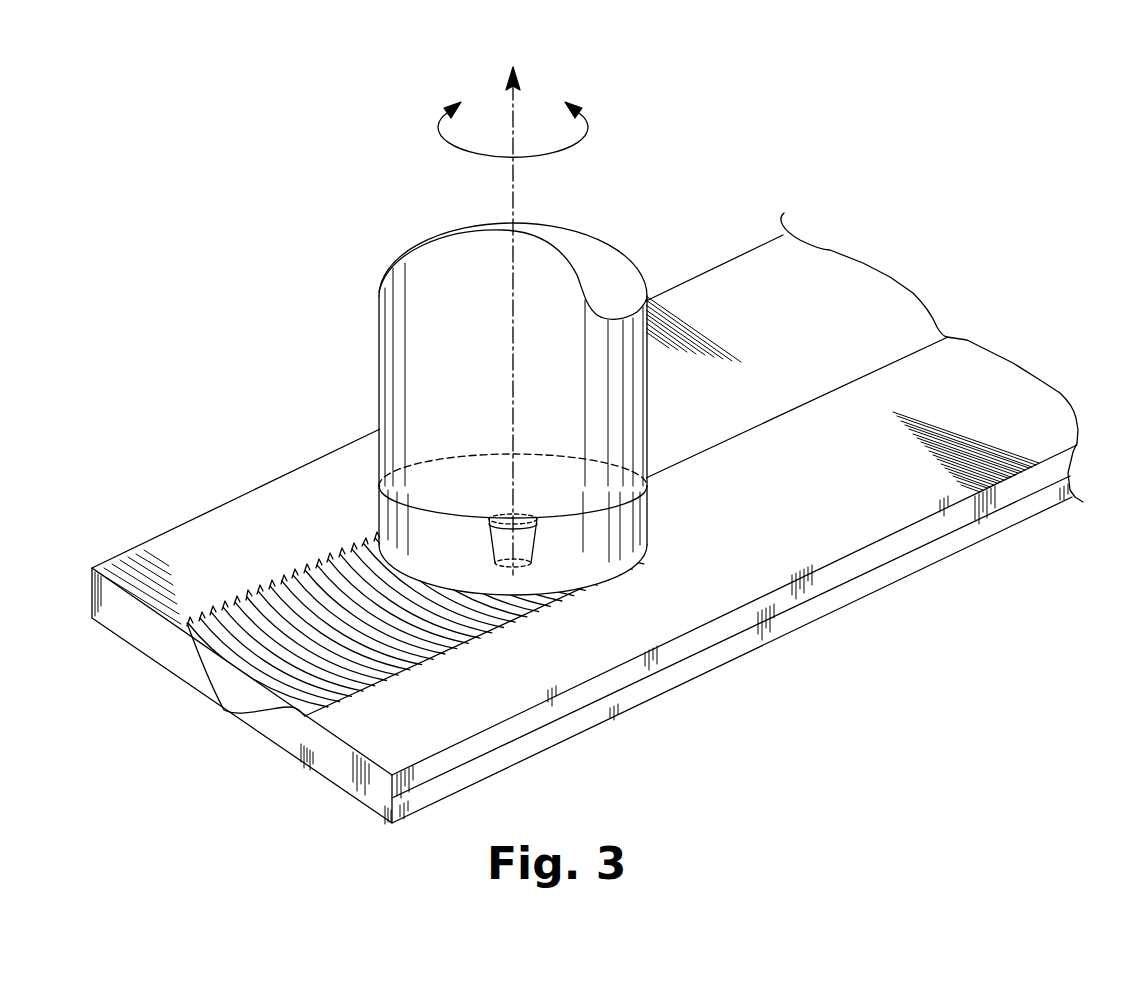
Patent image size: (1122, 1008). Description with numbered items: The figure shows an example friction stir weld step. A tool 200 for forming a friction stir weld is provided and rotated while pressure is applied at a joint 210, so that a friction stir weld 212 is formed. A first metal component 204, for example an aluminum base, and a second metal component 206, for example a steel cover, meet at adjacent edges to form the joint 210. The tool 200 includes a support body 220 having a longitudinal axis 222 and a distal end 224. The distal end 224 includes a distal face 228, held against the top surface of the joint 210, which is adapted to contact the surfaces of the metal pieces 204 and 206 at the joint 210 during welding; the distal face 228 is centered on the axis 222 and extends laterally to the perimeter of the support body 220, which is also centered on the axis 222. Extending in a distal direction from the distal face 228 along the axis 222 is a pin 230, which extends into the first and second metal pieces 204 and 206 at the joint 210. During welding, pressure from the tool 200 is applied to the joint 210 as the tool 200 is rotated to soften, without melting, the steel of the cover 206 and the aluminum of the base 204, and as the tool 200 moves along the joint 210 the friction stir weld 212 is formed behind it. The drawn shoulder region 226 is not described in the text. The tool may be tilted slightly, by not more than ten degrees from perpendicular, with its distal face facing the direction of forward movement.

The tool 200 is at (509, 370).
The first metal component 204 is at (830, 325).
The second metal component 206 is at (873, 461).
The joint 210 is at (945, 338).
The friction stir weld 212 is at (237, 692).
The support body 220 is at (435, 275).
The longitudinal axis 222 is at (513, 304).
The distal end 224 is at (362, 512).
The tool shoulder 226 is at (654, 550).
The distal face 228 is at (616, 592).
The pin 230 is at (530, 536).